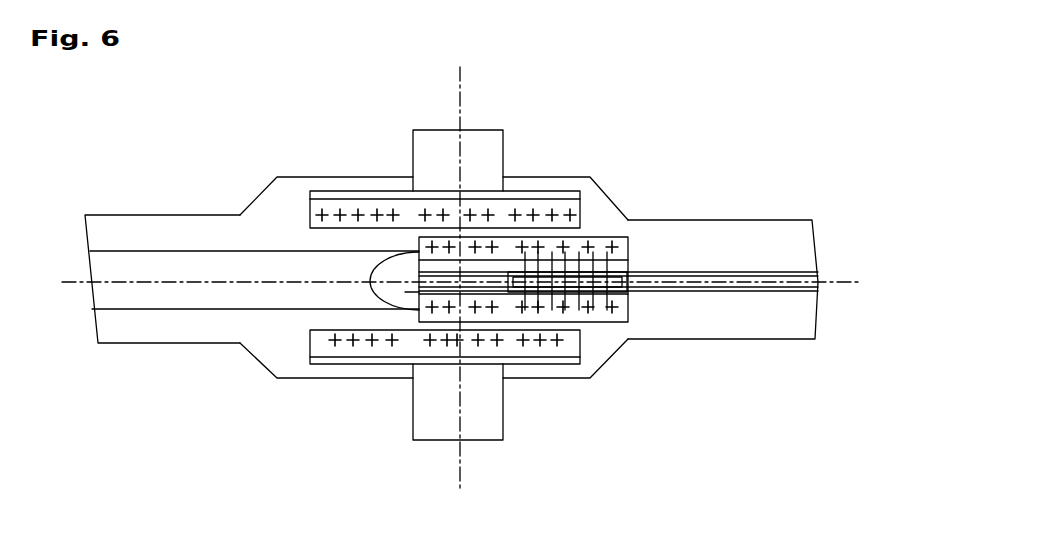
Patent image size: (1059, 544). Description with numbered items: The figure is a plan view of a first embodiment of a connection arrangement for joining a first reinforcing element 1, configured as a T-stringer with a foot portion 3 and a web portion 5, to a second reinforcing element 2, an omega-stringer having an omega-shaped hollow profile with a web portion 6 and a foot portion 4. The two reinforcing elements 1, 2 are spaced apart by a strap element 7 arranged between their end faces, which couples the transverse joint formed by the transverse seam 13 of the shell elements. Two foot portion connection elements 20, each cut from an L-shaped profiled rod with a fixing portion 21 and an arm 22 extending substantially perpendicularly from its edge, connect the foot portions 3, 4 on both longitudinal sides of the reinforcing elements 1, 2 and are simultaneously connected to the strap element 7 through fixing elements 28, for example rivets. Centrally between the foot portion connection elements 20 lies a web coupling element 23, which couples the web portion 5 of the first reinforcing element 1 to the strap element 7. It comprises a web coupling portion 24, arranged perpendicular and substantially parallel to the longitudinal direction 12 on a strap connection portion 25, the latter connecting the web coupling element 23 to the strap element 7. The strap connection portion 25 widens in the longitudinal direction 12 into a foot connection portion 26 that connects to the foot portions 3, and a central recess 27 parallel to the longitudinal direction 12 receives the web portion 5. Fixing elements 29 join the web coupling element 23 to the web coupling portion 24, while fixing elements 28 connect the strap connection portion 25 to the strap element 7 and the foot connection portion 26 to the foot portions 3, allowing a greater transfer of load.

The first reinforcing element 1 is at (712, 220).
The second reinforcing element 2 is at (172, 238).
The foot portion 3 is at (573, 183).
The foot portion 4 is at (367, 183).
The web portion 5 is at (637, 273).
The web portion 6 is at (350, 290).
The strap element 7 is at (435, 407).
The longitudinal direction 12 is at (74, 284).
The transverse seam 13 is at (461, 73).
The foot portion connection element 20 is at (308, 192).
The fixing portion 21 is at (328, 219).
The arm 22 is at (333, 198).
The web coupling element 23 is at (418, 292).
The web coupling portion 24 is at (482, 262).
The strap connection portion 25 is at (455, 315).
The foot connection portion 26 is at (588, 247).
The recess 27 is at (625, 305).
The fixing elements 28 is at (388, 213).
The fixing elements 29 is at (607, 262).